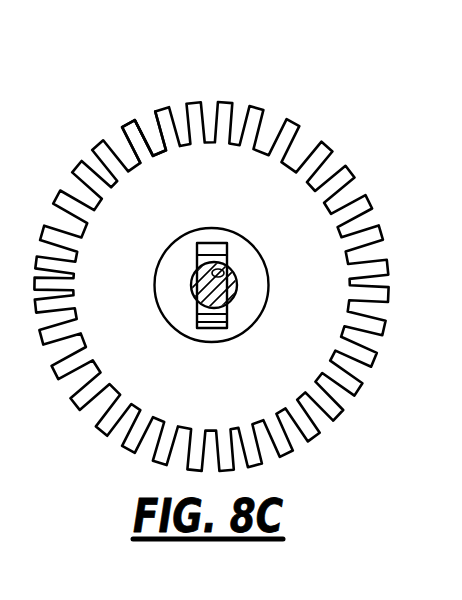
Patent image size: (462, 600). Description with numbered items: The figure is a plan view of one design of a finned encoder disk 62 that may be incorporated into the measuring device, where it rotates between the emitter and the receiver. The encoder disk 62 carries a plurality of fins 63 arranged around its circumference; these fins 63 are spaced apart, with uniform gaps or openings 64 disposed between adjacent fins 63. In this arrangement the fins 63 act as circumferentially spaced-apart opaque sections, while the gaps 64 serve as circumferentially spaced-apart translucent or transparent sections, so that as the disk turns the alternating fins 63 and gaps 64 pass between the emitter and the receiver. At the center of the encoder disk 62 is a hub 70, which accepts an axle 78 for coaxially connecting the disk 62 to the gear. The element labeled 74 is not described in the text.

The encoder disk 62 is at (268, 100).
The fin 63 is at (131, 120).
The gap 64 is at (148, 150).
The hub 70 is at (170, 322).
The bearing 74 is at (238, 280).
The axle 78 is at (236, 288).